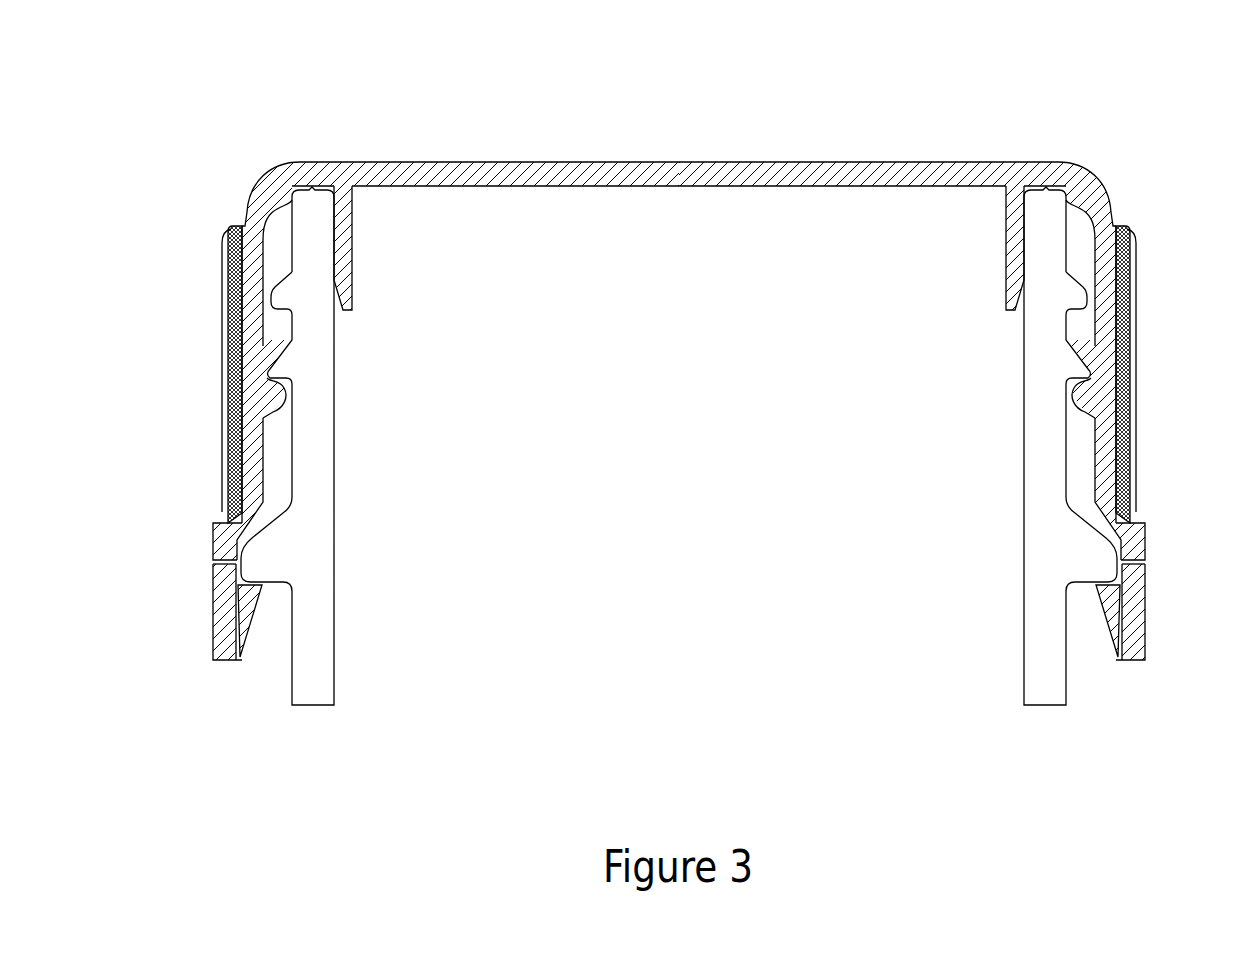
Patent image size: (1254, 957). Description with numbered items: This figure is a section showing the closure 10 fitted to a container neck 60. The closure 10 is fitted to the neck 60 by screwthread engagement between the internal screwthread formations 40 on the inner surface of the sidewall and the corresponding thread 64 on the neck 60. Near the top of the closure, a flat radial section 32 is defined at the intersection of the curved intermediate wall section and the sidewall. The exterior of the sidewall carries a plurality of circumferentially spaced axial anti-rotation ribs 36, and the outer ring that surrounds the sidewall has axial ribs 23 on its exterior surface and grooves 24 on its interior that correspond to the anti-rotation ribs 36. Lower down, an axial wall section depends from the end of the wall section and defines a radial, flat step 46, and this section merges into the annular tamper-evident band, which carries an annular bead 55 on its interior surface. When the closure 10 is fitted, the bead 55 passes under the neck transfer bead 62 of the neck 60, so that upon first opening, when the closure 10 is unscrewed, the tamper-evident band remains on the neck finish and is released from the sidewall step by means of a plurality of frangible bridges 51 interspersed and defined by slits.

The closure 10 is at (664, 393).
The flat radial section 32 is at (231, 247).
The thread 64 is at (205, 279).
The axial ribs 23 is at (181, 370).
The grooves 24 is at (208, 393).
The anti-rotation ribs 36 is at (184, 374).
The radial flat step 46 is at (168, 525).
The frangible bridges 51 is at (165, 554).
The annular bead 55 is at (171, 612).
The neck transfer bead 62 is at (251, 669).
The container neck 60 is at (348, 457).
The internal screwthread formations 40 is at (1152, 414).